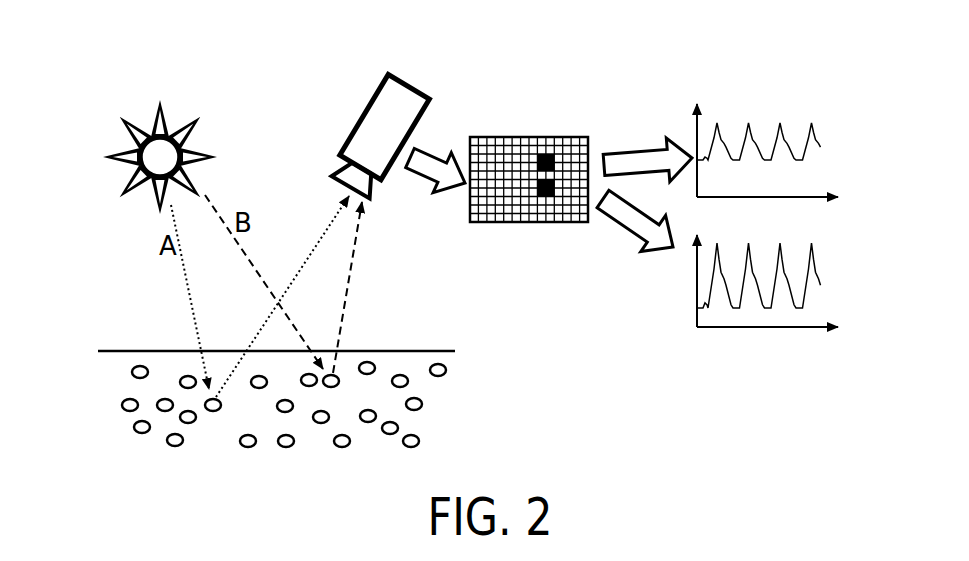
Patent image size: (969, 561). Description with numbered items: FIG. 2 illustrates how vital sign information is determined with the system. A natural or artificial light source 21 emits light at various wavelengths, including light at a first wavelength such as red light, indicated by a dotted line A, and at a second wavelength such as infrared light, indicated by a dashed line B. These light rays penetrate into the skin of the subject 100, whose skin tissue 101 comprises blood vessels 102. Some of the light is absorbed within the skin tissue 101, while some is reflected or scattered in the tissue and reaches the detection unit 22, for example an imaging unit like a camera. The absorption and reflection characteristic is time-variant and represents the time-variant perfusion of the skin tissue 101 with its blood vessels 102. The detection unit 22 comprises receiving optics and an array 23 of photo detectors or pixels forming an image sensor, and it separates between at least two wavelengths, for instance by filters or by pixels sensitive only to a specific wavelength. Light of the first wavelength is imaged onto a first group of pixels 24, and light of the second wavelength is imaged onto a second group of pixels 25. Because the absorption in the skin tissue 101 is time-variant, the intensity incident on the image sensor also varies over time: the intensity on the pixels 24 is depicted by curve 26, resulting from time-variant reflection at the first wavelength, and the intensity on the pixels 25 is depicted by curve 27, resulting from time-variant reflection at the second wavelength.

The light source 21 is at (167, 119).
The detection unit 22 is at (418, 90).
The array of photo detectors or pixels 23 is at (486, 136).
The first group of pixels 24 is at (545, 154).
The second group of pixels 25 is at (542, 197).
The curve 26 is at (754, 133).
The curve 27 is at (750, 252).
The subject 100 is at (275, 353).
The skin tissue 101 is at (118, 350).
The blood vessels 102 is at (122, 406).